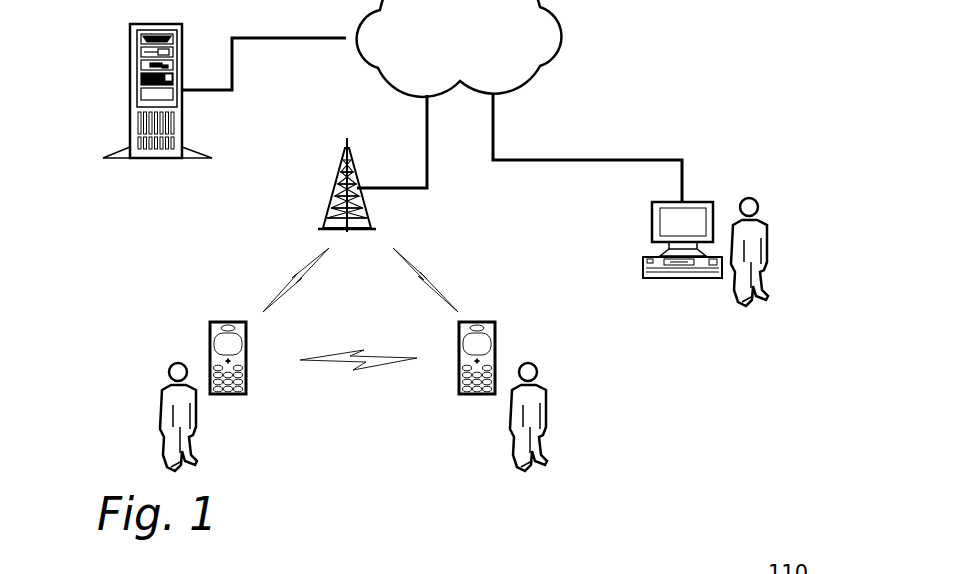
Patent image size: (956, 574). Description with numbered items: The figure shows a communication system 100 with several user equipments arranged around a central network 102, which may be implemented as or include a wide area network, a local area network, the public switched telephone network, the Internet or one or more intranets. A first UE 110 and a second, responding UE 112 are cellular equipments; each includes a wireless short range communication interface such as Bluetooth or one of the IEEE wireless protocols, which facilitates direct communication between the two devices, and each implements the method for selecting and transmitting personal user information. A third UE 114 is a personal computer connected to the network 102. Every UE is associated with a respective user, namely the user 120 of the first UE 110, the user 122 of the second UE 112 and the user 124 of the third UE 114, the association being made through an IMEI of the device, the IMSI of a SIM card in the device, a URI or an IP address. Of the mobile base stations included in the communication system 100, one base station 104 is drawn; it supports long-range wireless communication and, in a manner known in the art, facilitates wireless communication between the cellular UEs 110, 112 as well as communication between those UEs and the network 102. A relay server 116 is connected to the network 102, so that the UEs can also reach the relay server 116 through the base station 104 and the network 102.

The communication system 100 is at (642, 74).
The network 102 is at (480, 51).
The mobile base station 104 is at (338, 178).
The first UE 110 is at (210, 340).
The second UE 112 is at (498, 330).
The third UE 114 is at (705, 200).
The relay server 116 is at (129, 78).
The user 120 is at (157, 405).
The user 122 is at (548, 393).
The user 124 is at (769, 230).